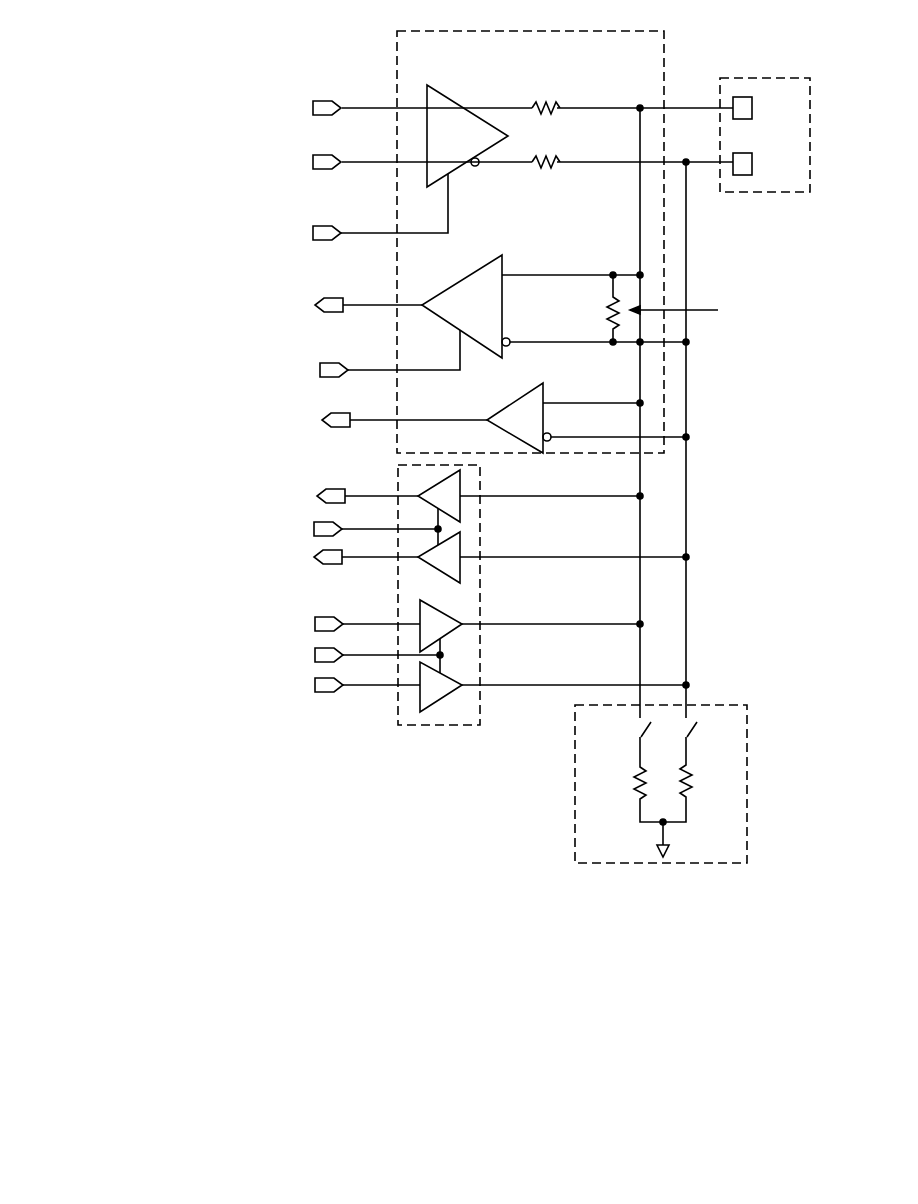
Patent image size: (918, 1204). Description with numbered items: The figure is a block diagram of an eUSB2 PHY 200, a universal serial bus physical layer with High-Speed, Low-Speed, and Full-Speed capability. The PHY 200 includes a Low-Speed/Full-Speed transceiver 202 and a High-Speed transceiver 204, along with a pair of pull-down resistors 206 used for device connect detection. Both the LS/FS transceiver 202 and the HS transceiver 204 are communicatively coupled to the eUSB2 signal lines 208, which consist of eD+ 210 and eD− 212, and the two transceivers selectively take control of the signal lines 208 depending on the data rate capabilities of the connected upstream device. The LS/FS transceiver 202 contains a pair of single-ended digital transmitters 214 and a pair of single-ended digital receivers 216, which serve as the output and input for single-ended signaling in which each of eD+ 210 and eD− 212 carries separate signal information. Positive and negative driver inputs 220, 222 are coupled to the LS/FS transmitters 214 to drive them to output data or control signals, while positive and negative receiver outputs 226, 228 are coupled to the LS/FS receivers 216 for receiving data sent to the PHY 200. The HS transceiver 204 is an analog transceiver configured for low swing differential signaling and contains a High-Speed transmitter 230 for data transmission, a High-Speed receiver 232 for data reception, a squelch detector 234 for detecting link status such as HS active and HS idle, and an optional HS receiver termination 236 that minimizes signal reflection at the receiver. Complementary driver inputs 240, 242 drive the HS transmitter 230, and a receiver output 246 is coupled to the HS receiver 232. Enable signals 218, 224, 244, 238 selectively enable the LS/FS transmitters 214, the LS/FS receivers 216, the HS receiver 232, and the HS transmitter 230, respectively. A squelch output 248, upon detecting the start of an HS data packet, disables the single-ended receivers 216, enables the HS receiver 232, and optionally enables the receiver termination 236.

The eUSB2 PHY 200 is at (442, 1038).
The Low-Speed/Full-Speed transceiver 202 is at (398, 708).
The High-Speed transceiver 204 is at (596, 31).
The pull-down resistors 206 is at (697, 863).
The eUSB2 signal lines 208 is at (751, 137).
The eD+ 210 is at (743, 97).
The eD− 212 is at (745, 176).
The single-ended digital transmitters 214 is at (448, 682).
The single-ended digital receivers 216 is at (450, 563).
The enable signal 218 is at (336, 648).
The positive driver input 220 is at (336, 617).
The negative driver input 222 is at (338, 678).
The enable signal 224 is at (338, 522).
The positive receiver output 226 is at (334, 489).
The negative receiver output 228 is at (338, 550).
The High-Speed transmitter 230 is at (452, 101).
The High-Speed receiver 232 is at (482, 262).
The squelch detector 234 is at (509, 406).
The HS receiver termination 236 is at (627, 290).
The enable signal 238 is at (326, 226).
The complementary driver input 240 is at (324, 101).
The complementary driver input 242 is at (326, 155).
The enable signal 244 is at (336, 363).
The receiver output 246 is at (329, 298).
The squelch detector output 248 is at (336, 413).